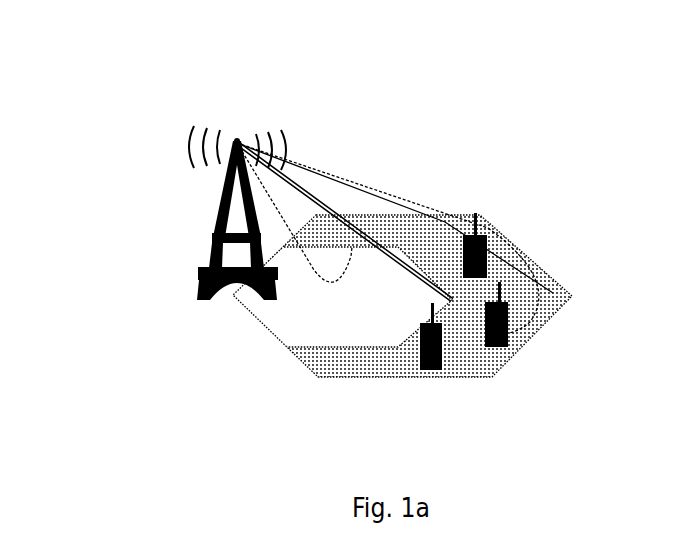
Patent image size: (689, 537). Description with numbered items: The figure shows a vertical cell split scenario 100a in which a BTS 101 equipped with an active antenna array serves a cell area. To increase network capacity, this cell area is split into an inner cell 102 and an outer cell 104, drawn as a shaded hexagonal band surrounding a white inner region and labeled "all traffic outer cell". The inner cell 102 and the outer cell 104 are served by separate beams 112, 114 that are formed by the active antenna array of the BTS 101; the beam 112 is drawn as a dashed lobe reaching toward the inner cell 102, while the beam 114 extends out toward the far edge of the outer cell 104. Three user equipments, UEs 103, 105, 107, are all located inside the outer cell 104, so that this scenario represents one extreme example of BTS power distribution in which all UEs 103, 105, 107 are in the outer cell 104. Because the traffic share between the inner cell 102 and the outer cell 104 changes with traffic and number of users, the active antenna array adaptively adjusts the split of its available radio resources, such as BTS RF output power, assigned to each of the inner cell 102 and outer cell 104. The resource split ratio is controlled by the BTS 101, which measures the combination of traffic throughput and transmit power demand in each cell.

The scenario 100a is at (382, 111).
The BTS 101 is at (155, 203).
The inner cell 102 is at (322, 352).
The UE 103 is at (492, 228).
The outer cell 104 is at (382, 380).
The UE 105 is at (516, 352).
The UE 107 is at (450, 371).
The beam 112 is at (312, 277).
The beam 114 is at (556, 294).